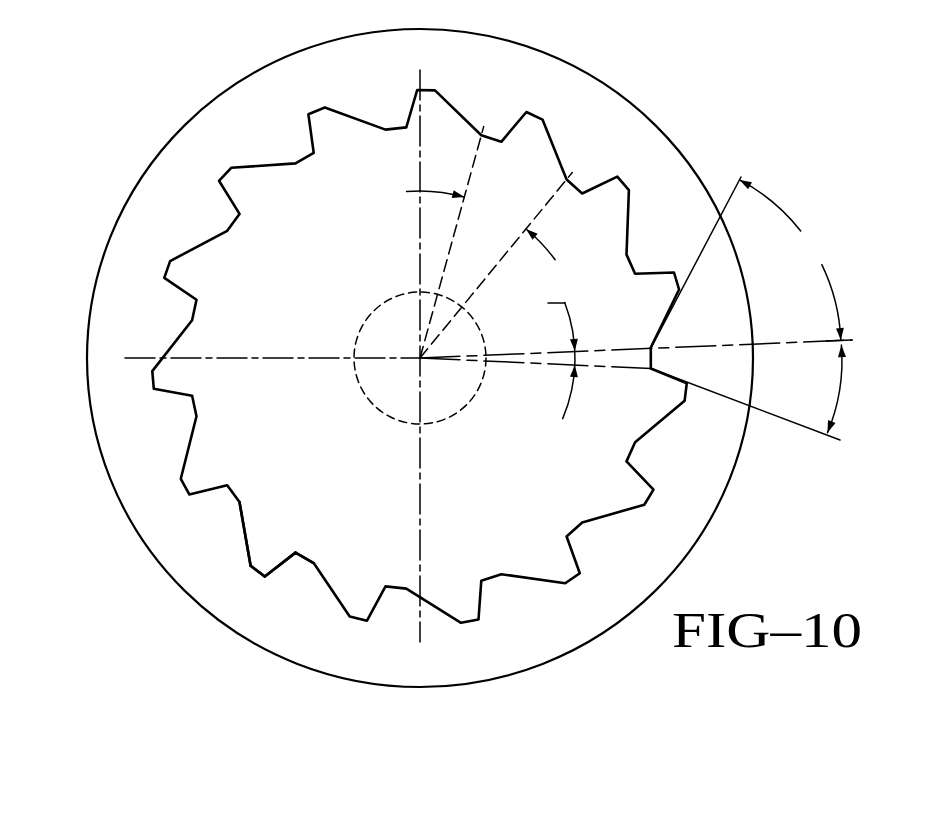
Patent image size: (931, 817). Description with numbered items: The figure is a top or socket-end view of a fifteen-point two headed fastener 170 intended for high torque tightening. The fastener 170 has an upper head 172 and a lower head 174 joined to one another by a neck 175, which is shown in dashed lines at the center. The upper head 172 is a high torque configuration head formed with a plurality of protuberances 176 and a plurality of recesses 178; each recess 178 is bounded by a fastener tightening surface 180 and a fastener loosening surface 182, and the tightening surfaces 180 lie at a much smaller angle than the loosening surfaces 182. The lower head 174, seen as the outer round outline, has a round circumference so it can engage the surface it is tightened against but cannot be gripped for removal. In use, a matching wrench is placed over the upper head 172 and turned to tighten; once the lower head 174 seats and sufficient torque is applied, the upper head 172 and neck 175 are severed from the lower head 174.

The two headed fastener 170 is at (150, 103).
The upper head 172 is at (163, 282).
The lower head 174 is at (127, 200).
The neck 175 is at (383, 303).
The protuberances 176 is at (250, 570).
The recesses 178 is at (307, 553).
The fastener tightening surfaces 180 is at (277, 563).
The fastener loosening surfaces 182 is at (242, 540).